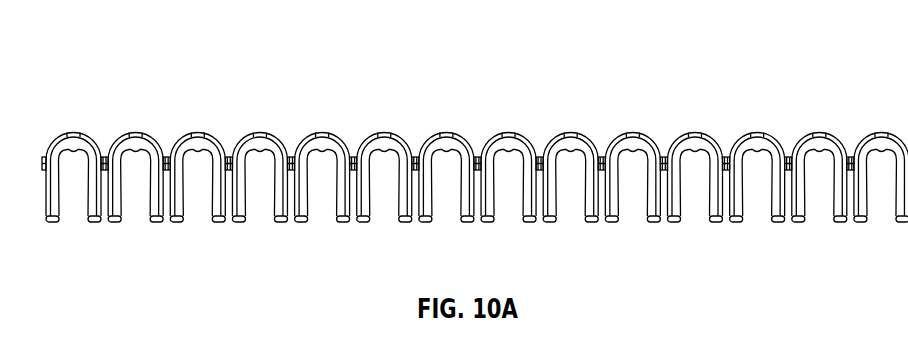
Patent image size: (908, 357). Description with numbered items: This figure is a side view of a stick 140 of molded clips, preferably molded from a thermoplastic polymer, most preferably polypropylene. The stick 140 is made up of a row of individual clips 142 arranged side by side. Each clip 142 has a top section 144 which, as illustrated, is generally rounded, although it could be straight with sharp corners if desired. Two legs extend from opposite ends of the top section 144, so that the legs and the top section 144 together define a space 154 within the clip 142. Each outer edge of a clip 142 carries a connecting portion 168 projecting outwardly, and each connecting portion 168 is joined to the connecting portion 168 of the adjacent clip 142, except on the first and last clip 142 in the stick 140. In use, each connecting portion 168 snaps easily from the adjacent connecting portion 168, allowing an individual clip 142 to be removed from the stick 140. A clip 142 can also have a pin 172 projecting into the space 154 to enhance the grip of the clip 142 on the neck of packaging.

The stick 140 is at (500, 89).
The clip 142 is at (78, 142).
The top section 144 is at (265, 147).
The space 154 is at (402, 214).
The connecting portion 168 is at (355, 150).
The pin 172 is at (326, 152).